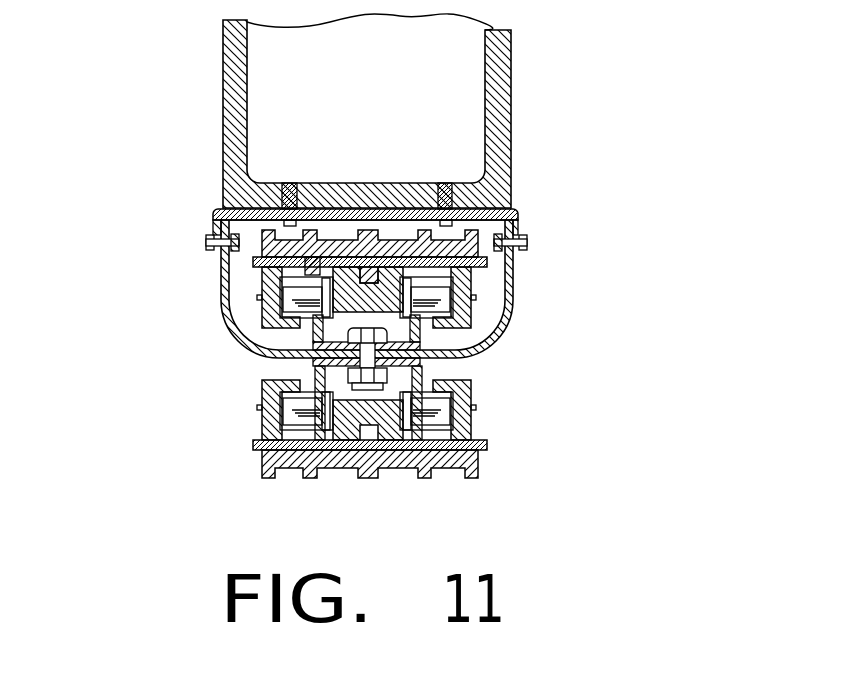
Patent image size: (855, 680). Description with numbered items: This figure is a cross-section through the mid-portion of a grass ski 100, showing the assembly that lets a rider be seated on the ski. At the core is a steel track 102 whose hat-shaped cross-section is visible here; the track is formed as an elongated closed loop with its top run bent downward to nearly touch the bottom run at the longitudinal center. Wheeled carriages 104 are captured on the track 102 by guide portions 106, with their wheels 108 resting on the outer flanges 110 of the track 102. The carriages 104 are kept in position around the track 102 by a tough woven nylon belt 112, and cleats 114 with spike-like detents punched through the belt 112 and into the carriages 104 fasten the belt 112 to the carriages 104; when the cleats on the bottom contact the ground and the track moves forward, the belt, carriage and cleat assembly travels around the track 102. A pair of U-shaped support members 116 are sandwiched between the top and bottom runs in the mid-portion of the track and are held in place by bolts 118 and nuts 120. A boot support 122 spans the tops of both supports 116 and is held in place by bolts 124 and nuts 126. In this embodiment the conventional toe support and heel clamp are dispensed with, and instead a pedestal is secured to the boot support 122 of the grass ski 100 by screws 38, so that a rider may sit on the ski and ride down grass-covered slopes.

The grass ski 100 is at (175, 237).
The screws 38 is at (290, 183).
The steel track 102 is at (430, 370).
The wheeled carriages 104 is at (497, 310).
The guide portions 106 is at (295, 360).
The wheels 108 is at (280, 435).
The outer flanges 110 is at (262, 408).
The belt 112 is at (500, 283).
The cleats 114 is at (475, 207).
The U-shaped support members 116 is at (497, 340).
The bolts 118 is at (280, 290).
The nuts 120 is at (368, 395).
The boot support 122 is at (520, 216).
The bolts 124 is at (527, 245).
The nuts 126 is at (238, 205).